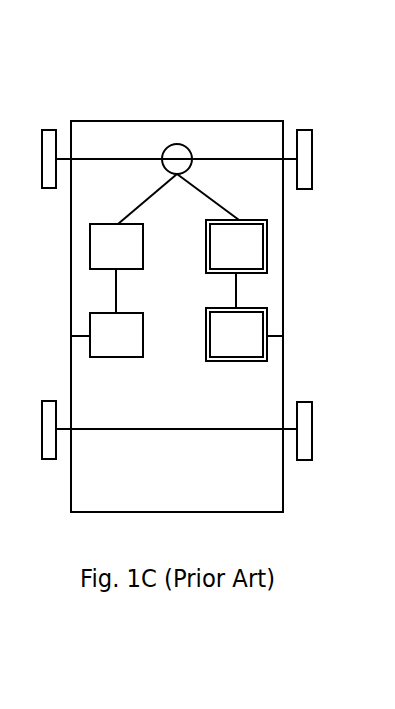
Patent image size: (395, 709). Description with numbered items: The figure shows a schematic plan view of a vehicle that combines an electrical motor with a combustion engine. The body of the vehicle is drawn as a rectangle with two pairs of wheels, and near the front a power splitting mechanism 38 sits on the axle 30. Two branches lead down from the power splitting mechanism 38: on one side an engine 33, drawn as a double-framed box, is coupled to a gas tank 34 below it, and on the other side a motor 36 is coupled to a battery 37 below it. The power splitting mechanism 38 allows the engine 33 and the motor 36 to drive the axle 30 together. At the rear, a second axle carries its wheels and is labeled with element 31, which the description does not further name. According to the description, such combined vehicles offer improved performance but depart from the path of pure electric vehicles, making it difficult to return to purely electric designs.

The axle 30 is at (214, 157).
The rear axle 31 is at (162, 431).
The engine 33 is at (236, 246).
The gas tank 34 is at (236, 334).
The motor 36 is at (116, 246).
The battery 37 is at (116, 335).
The power splitting mechanism 38 is at (177, 153).